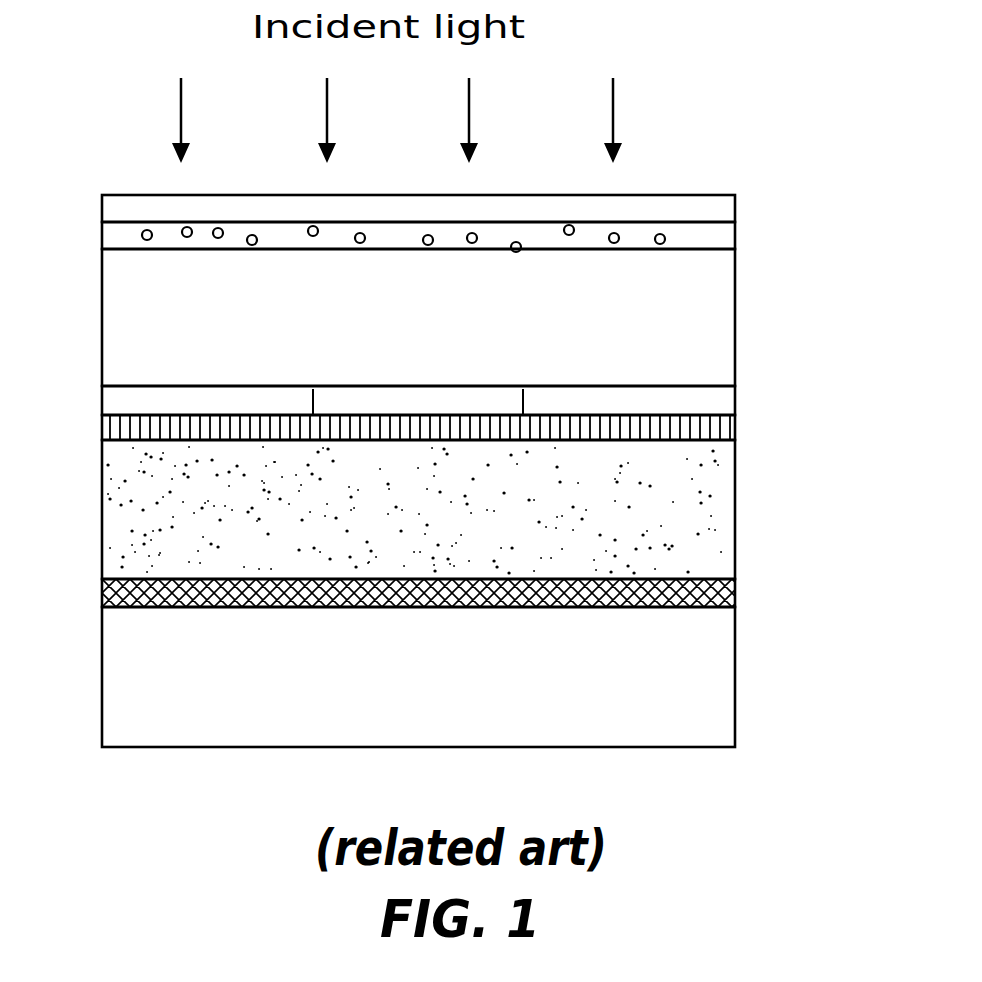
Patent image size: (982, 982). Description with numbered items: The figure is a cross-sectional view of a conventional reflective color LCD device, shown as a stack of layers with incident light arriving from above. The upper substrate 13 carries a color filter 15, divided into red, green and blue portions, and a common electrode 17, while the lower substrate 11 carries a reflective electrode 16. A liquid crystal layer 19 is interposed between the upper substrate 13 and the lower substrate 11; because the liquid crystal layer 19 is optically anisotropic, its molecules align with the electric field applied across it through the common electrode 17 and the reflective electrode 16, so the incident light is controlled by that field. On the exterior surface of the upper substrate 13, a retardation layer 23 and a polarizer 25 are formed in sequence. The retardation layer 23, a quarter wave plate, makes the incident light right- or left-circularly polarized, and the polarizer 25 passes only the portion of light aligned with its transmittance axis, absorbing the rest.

The polarizer 25 is at (723, 210).
The retardation layer 23 is at (723, 248).
The upper substrate 13 is at (723, 330).
The color filter 15 is at (723, 403).
The common electrode 17 is at (723, 437).
The liquid crystal layer 19 is at (723, 525).
The reflective electrode 16 is at (723, 598).
The lower substrate 11 is at (723, 683).